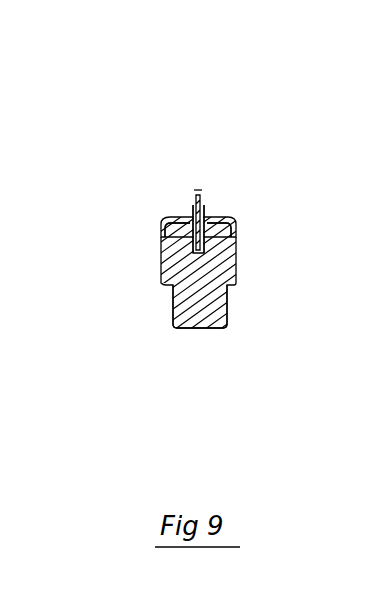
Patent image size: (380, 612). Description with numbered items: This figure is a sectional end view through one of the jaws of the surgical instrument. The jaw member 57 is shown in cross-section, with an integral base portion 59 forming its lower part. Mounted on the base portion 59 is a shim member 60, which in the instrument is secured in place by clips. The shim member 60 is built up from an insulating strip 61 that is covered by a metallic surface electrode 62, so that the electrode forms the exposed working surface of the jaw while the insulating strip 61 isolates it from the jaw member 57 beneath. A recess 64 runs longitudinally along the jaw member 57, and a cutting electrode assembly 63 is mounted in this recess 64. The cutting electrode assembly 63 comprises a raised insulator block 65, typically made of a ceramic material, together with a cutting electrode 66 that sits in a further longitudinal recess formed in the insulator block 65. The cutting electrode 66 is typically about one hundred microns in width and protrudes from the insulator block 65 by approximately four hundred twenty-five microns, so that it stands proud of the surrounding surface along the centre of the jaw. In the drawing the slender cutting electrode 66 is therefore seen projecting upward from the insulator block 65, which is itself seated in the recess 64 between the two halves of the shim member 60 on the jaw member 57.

The jaw member 57 is at (161, 272).
The integral base portion 59 is at (198, 300).
The shim member 60 is at (245, 227).
The insulating strip 61 is at (215, 228).
The metallic surface electrode 62 is at (170, 218).
The cutting electrode assembly 63 is at (201, 161).
The recess 64 is at (202, 254).
The raised insulator block 65 is at (192, 210).
The cutting electrode 66 is at (203, 194).